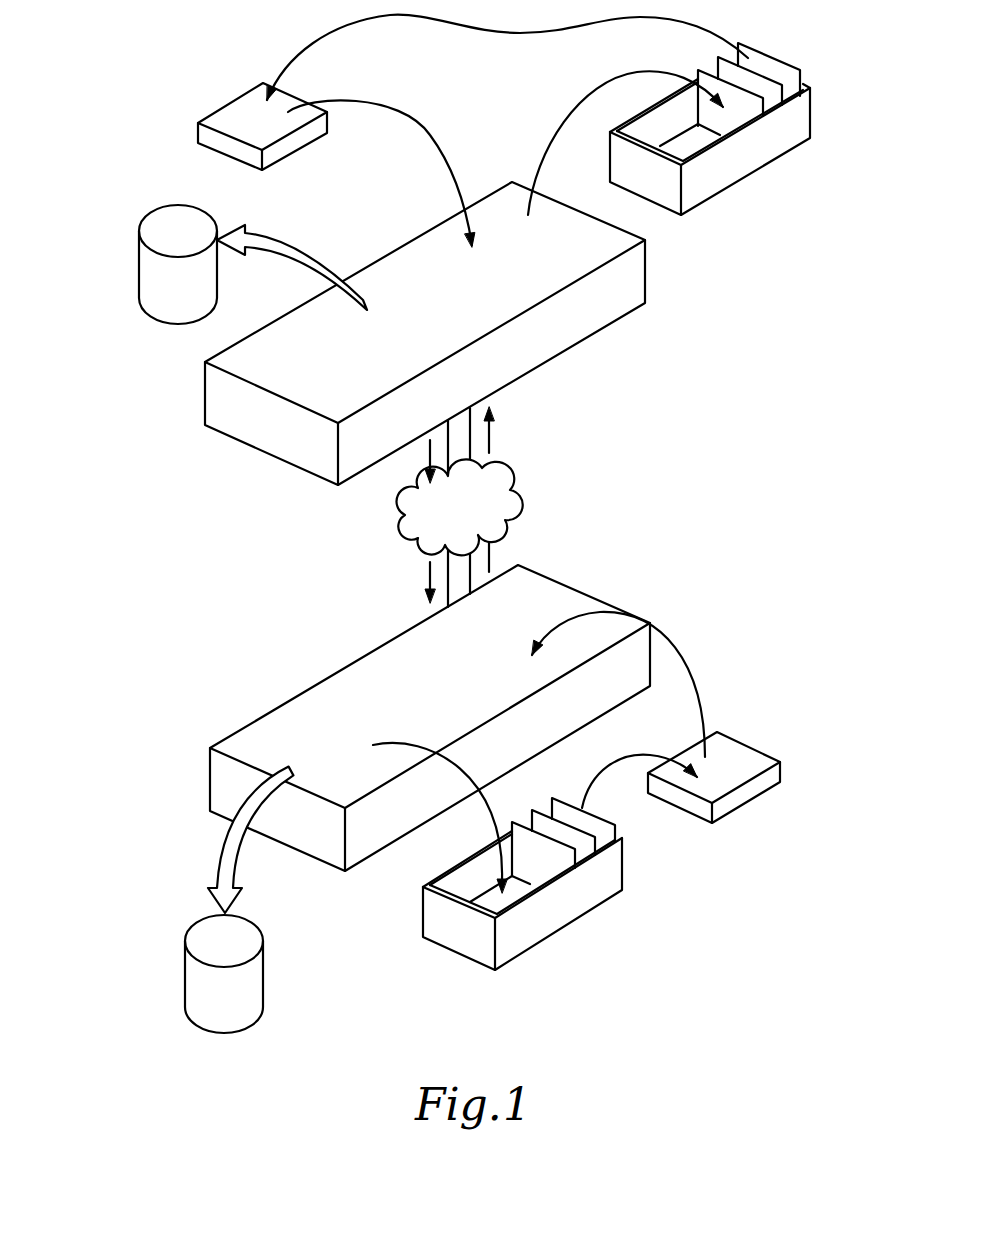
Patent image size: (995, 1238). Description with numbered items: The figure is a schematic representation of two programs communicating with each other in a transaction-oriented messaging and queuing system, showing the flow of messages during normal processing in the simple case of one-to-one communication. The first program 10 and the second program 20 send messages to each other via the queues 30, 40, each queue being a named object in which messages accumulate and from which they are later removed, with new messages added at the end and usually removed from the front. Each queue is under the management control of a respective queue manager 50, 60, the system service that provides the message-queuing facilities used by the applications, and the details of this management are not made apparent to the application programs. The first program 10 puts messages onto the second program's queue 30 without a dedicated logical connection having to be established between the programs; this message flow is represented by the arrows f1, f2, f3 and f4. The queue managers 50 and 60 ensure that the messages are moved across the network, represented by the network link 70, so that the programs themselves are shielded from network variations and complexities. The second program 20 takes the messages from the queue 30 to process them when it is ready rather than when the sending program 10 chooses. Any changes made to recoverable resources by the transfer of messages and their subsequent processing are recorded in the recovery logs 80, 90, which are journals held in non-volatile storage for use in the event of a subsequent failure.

The first program 10 is at (230, 111).
The second program 20 is at (745, 795).
The queue 30 is at (517, 942).
The queue 40 is at (764, 157).
The queue manager 50 is at (215, 786).
The queue manager 60 is at (212, 400).
The network link 70 is at (450, 560).
The recovery log 80 is at (158, 222).
The recovery log 90 is at (190, 974).
The message flow arrow f1 is at (427, 128).
The message flow arrow f2 is at (430, 455).
The message flow arrow f3 is at (430, 573).
The message flow arrow f4 is at (490, 803).